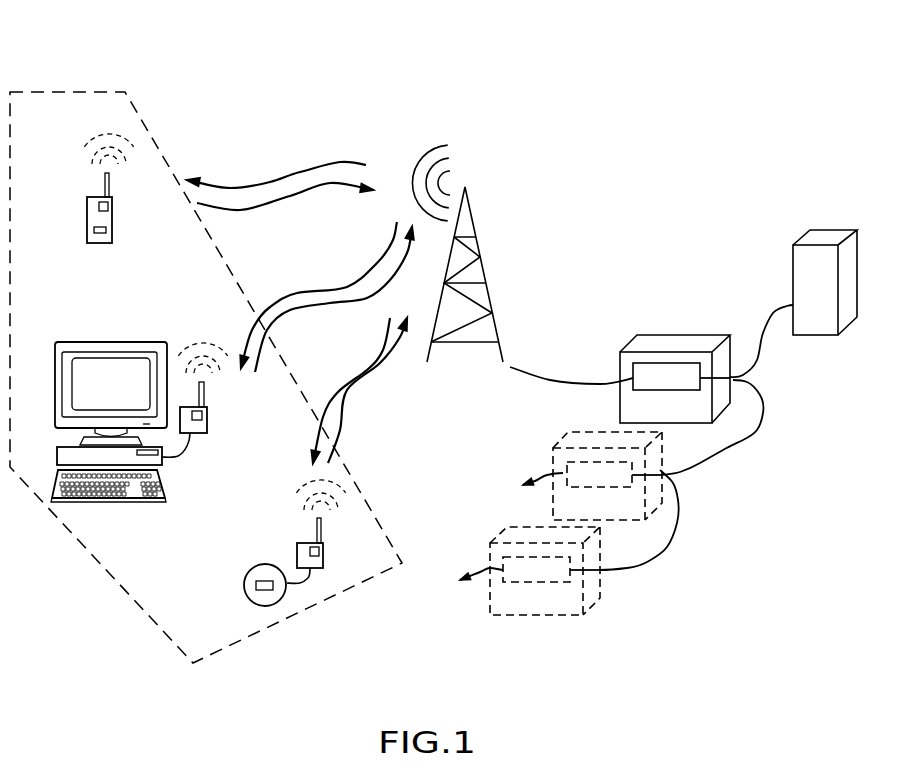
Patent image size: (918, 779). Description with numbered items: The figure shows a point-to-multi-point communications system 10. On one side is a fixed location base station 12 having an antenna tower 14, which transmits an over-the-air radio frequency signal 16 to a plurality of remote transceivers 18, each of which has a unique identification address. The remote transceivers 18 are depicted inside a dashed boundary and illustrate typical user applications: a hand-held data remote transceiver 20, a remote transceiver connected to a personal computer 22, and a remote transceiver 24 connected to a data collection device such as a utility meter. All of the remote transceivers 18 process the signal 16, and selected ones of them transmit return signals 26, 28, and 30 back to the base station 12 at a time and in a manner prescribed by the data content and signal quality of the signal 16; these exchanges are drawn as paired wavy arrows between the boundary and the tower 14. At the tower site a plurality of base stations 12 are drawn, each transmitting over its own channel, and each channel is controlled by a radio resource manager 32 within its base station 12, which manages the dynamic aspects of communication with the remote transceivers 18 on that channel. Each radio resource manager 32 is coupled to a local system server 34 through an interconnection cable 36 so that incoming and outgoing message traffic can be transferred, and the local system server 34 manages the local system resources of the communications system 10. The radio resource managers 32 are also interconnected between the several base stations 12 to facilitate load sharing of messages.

The point-to-multi-point communications system 10 is at (403, 66).
The base station 12 is at (628, 344).
The antenna tower 14 is at (461, 253).
The over-the-air radio frequency signal 16 is at (289, 262).
The remote transceivers 18 is at (60, 76).
The hand-held data remote transceiver 20 is at (108, 210).
The personal computer 22 is at (139, 424).
The remote transceiver connected to data collection device 24 is at (275, 543).
The return signal 26 is at (280, 203).
The return signal 28 is at (327, 297).
The return signal 30 is at (359, 390).
The radio resource manager 32 is at (668, 363).
The local system server 34 is at (825, 260).
The interconnection cable 36 is at (658, 437).